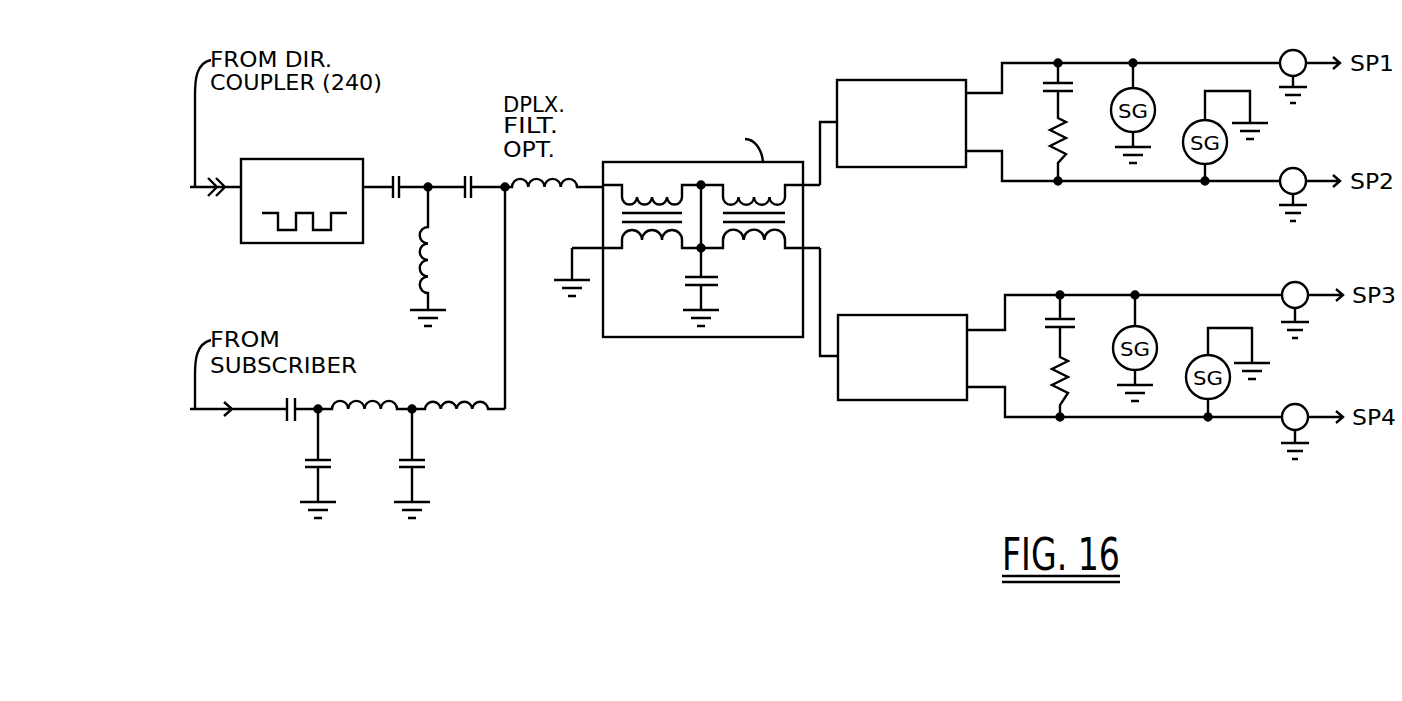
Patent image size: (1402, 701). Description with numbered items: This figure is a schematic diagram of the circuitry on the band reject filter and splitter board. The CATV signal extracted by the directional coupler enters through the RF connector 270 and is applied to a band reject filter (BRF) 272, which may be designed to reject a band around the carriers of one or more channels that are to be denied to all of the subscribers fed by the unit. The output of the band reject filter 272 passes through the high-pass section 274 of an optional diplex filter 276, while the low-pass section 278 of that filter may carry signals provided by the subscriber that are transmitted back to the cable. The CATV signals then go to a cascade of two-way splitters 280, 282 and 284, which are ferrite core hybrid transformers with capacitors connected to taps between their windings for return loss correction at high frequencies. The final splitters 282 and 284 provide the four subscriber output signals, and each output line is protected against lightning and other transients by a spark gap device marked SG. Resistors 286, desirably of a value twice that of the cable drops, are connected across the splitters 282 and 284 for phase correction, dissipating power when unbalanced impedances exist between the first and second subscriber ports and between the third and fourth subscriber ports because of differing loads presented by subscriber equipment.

The RF connector 270 is at (209, 197).
The band reject filter (BRF) 272 is at (305, 159).
The high-pass section 274 is at (412, 227).
The diplex filter 276 is at (567, 421).
The low-pass section 278 is at (297, 494).
The two-way splitter 280 is at (728, 337).
The two-way splitter 282 is at (910, 167).
The two-way splitter 284 is at (913, 400).
The resistors 286 is at (1062, 153).